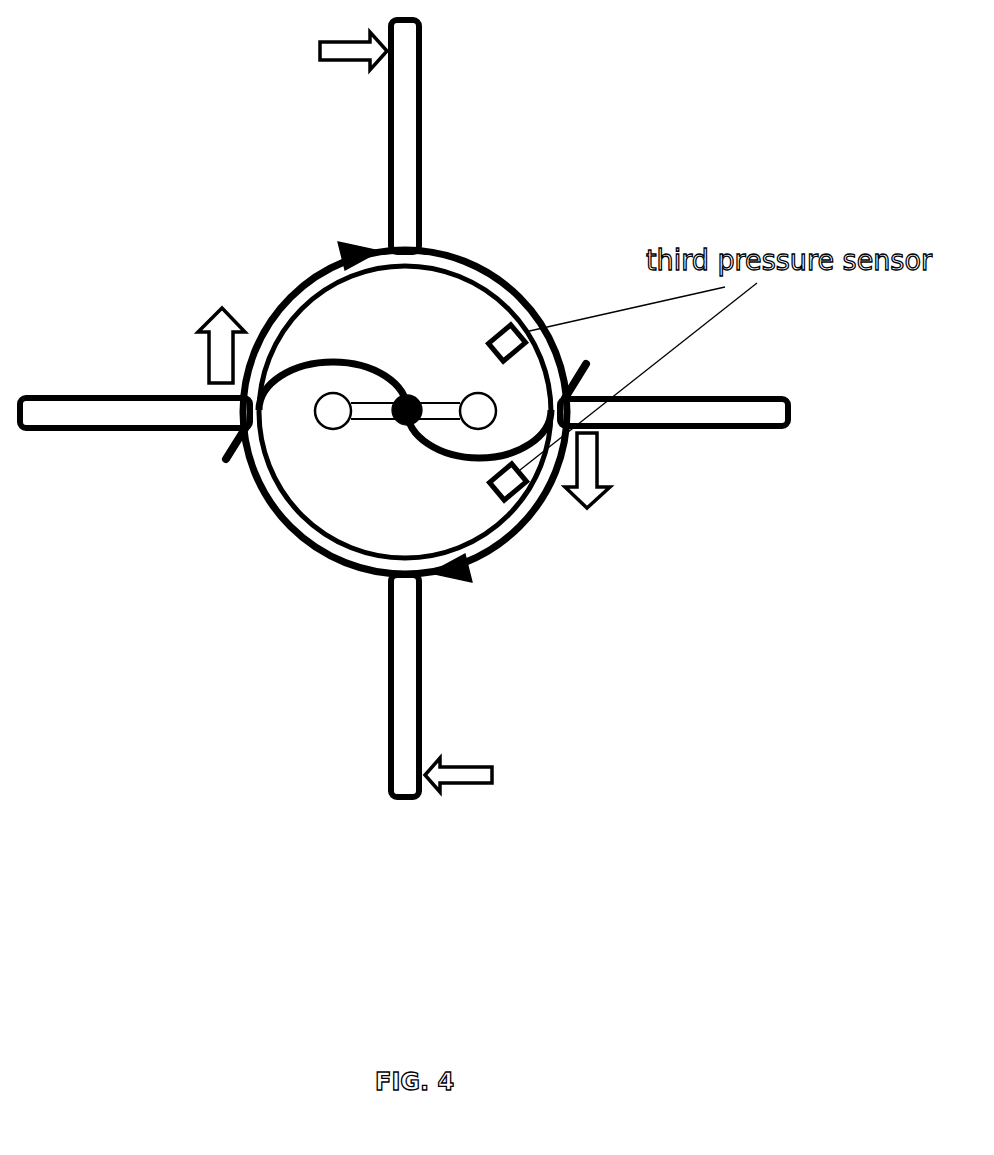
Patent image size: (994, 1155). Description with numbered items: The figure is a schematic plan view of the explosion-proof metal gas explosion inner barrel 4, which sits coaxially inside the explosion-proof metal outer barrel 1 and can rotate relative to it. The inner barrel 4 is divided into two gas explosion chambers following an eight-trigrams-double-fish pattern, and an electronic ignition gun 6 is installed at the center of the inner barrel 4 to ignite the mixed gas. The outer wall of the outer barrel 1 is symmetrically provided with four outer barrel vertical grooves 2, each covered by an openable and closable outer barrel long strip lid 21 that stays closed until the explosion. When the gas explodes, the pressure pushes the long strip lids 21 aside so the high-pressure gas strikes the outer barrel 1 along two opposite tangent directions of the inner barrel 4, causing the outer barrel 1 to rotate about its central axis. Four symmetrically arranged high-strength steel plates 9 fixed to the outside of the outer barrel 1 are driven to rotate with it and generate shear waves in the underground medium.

The high-strength steel plate 9 is at (404, 408).
The explosion-proof metal gas explosion inner barrel 4 is at (497, 295).
The explosion-proof metal outer barrel 1 is at (268, 308).
The outer barrel vertical groove 2 is at (573, 360).
The outer barrel long strip lid 21 is at (373, 245).
The electronic ignition gun 6 is at (333, 412).